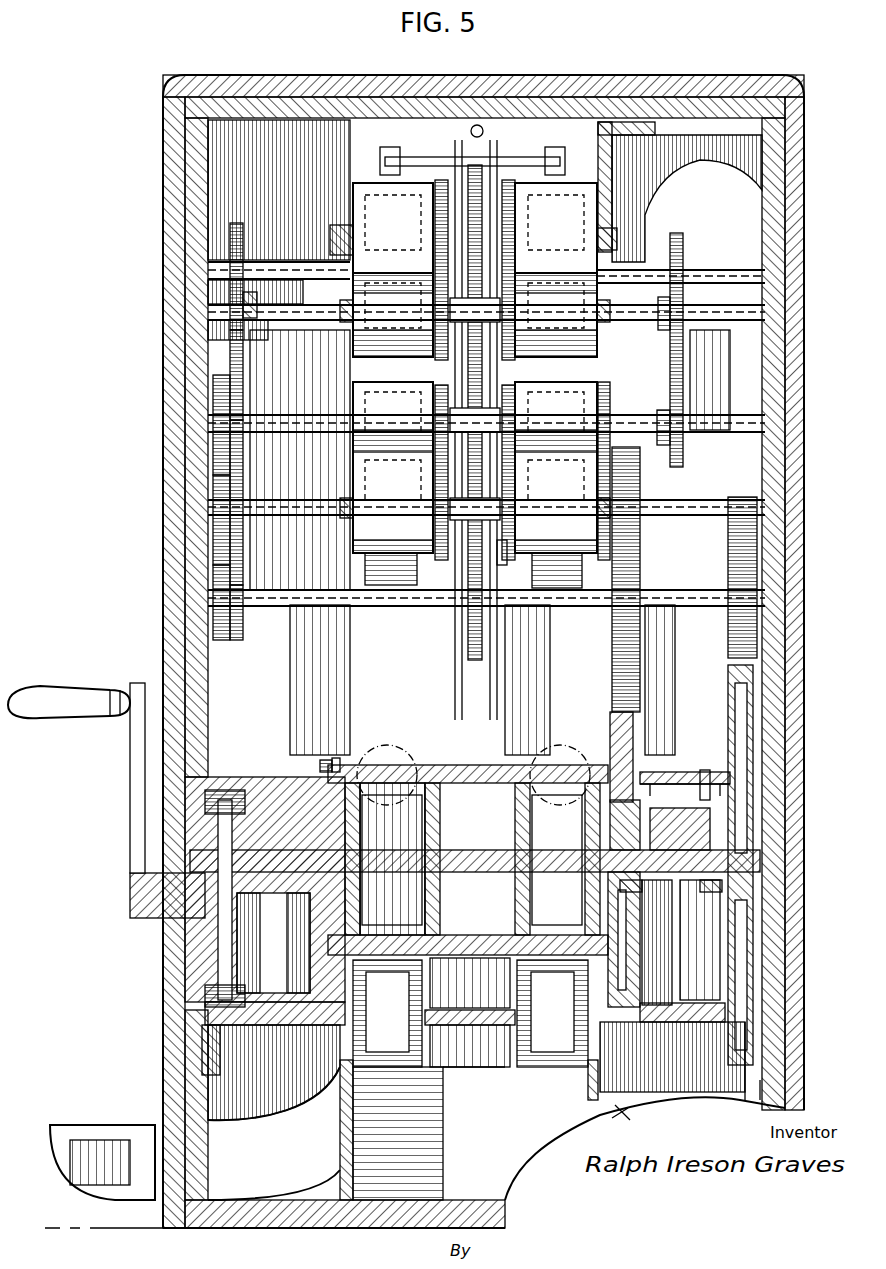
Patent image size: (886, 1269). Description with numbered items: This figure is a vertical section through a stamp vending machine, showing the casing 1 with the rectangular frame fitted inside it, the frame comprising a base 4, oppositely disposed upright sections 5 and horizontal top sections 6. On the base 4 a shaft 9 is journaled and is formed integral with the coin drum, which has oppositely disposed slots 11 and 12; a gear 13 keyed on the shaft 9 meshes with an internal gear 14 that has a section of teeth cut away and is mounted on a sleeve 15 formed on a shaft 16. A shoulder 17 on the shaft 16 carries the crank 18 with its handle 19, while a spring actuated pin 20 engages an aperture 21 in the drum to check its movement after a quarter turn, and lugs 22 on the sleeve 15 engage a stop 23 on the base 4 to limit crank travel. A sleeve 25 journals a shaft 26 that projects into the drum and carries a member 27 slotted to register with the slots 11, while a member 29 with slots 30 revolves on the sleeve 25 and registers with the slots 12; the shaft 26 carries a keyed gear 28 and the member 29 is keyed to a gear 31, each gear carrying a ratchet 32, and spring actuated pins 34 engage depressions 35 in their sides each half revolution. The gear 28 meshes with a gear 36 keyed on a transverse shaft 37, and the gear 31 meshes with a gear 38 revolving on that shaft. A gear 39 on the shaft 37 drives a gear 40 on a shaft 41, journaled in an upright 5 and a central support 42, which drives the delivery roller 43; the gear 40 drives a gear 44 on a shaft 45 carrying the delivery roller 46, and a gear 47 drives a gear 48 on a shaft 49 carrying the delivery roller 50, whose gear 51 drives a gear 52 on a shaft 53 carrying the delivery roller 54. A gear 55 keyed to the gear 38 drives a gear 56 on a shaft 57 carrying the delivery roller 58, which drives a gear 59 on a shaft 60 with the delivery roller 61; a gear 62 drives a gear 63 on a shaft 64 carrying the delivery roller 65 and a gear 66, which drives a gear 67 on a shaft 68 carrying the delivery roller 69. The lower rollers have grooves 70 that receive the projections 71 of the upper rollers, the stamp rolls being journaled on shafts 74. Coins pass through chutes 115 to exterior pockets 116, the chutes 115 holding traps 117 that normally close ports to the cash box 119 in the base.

The casing 1 is at (350, 80).
The base 4 is at (760, 1016).
The vertical upright sections 5 is at (185, 216).
The horizontal top sections 6 is at (572, 110).
The shaft 9 is at (230, 935).
The slots 11 is at (410, 770).
The slots 12 is at (572, 770).
The gear 13 is at (185, 940).
The internal gear 14 is at (205, 982).
The sleeve 15 is at (205, 808).
The shaft 16 is at (135, 905).
The shoulder 17 is at (185, 925).
The crank 18 is at (130, 788).
The handle 19 is at (50, 720).
The spring actuated pin 20 is at (326, 760).
The aperture 21 is at (338, 762).
The lugs 22 is at (230, 1050).
The stop 23 is at (267, 1044).
The sleeve 25 is at (582, 838).
The shaft 26 is at (760, 860).
The member 27 is at (424, 838).
The gear 28 is at (745, 746).
The member 29 is at (499, 910).
The slots 30 is at (493, 887).
The gear 31 is at (610, 720).
The ratchet 32 is at (722, 888).
The spring actuated pins 34 is at (660, 782).
The depressions 35 is at (745, 760).
The gear 36 is at (758, 556).
The transverse shaft 37 is at (698, 606).
The gear 38 is at (612, 666).
The gear 39 is at (232, 638).
The gear 40 is at (232, 544).
The shaft 41 is at (318, 518).
The central support 42 is at (440, 122).
The delivery roller 43 is at (335, 540).
The gear 44 is at (232, 461).
The shaft 45 is at (345, 436).
The delivery roller 46 is at (393, 483).
The gear 47 is at (244, 392).
The gear 48 is at (244, 352).
The shaft 49 is at (318, 320).
The delivery roller 50 is at (393, 315).
The gear 51 is at (430, 370).
The gear 52 is at (434, 196).
The shaft 53 is at (430, 212).
The delivery roller 54 is at (353, 245).
The gear 55 is at (612, 636).
The gear 56 is at (642, 512).
The shaft 57 is at (500, 548).
The delivery roller 58 is at (556, 524).
The gear 59 is at (612, 404).
The shaft 60 is at (722, 436).
The delivery roller 61 is at (556, 467).
The gear 62 is at (683, 404).
The gear 63 is at (686, 345).
The shaft 64 is at (630, 330).
The delivery roller 65 is at (600, 294).
The gear 66 is at (556, 315).
The gear 67 is at (518, 206).
The shaft 68 is at (618, 232).
The delivery roller 69 is at (612, 212).
The grooves 70 is at (345, 300).
The projections 71 is at (353, 418).
The shafts 74 is at (708, 270).
The chutes 115 is at (652, 1128).
The pockets 116 is at (108, 1128).
The traps 117 is at (530, 1072).
The cash box 119 is at (469, 1130).